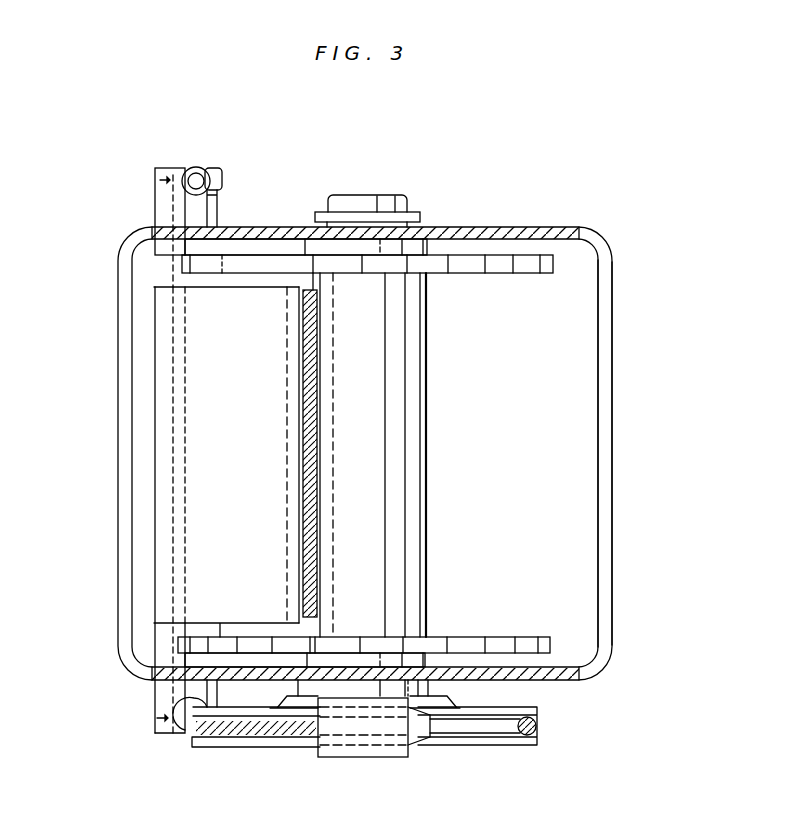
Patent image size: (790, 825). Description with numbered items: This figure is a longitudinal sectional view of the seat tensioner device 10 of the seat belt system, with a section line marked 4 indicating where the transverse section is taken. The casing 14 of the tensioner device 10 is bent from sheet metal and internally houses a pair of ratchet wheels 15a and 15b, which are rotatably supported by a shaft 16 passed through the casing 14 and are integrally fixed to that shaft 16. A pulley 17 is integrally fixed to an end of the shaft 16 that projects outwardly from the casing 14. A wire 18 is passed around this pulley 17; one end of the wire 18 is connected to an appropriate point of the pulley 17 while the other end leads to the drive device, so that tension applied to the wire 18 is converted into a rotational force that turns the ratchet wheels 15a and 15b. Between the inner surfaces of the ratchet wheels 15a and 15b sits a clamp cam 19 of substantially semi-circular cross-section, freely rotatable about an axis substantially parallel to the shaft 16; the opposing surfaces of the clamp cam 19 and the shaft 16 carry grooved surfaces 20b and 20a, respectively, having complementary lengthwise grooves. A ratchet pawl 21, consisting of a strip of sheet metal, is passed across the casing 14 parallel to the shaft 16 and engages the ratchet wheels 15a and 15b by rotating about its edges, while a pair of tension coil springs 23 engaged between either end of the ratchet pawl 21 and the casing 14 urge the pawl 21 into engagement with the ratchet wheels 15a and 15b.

The tensioner device 10 is at (635, 257).
The casing 14 is at (608, 530).
The ratchet wheel 15a is at (470, 635).
The ratchet wheel 15b is at (497, 273).
The shaft 16 is at (420, 530).
The pulley 17 is at (480, 747).
The wire 18 is at (252, 737).
The clamp cam 19 is at (158, 532).
The grooved surface 20a is at (336, 393).
The grooved surface 20b is at (285, 393).
The ratchet pawl 21 is at (158, 272).
The tension coil springs 23 is at (192, 162).
The section line 4- 4 is at (110, 457).